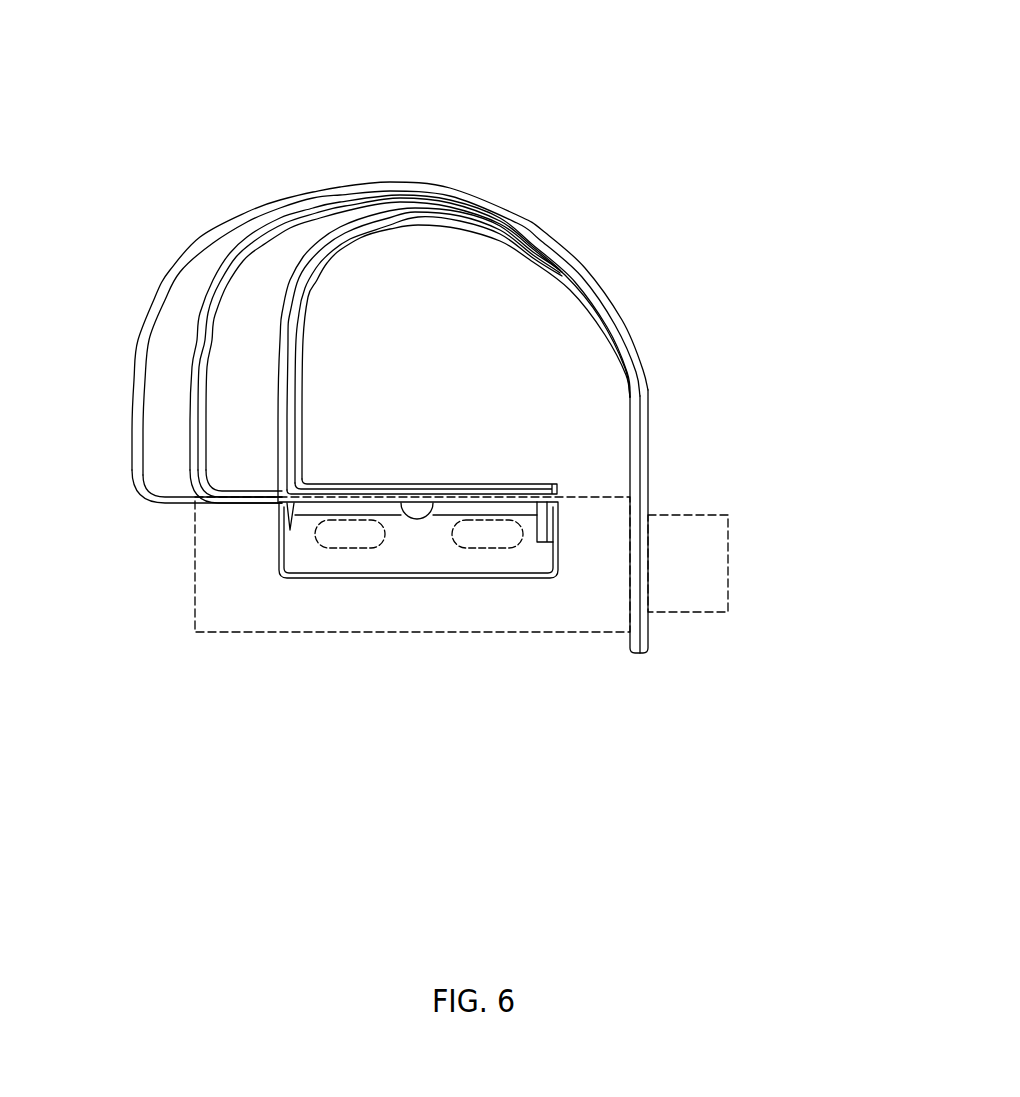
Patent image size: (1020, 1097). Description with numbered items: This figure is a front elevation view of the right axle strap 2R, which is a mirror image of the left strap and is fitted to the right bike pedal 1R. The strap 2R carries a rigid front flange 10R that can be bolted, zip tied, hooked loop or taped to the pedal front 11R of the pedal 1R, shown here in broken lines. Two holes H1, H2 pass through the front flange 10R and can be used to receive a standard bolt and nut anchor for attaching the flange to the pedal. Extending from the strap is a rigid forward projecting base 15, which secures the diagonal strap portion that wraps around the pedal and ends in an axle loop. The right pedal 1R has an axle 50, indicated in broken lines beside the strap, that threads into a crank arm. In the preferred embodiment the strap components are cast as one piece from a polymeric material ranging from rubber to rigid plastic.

The right axle strap 2R is at (530, 232).
The forward projecting base 15 is at (440, 485).
The front flange 10R is at (426, 553).
The hole H1 is at (352, 548).
The hole H2 is at (500, 548).
The pedal front 11R is at (198, 612).
The axle 50 is at (717, 588).
The right bike pedal 1R is at (609, 600).